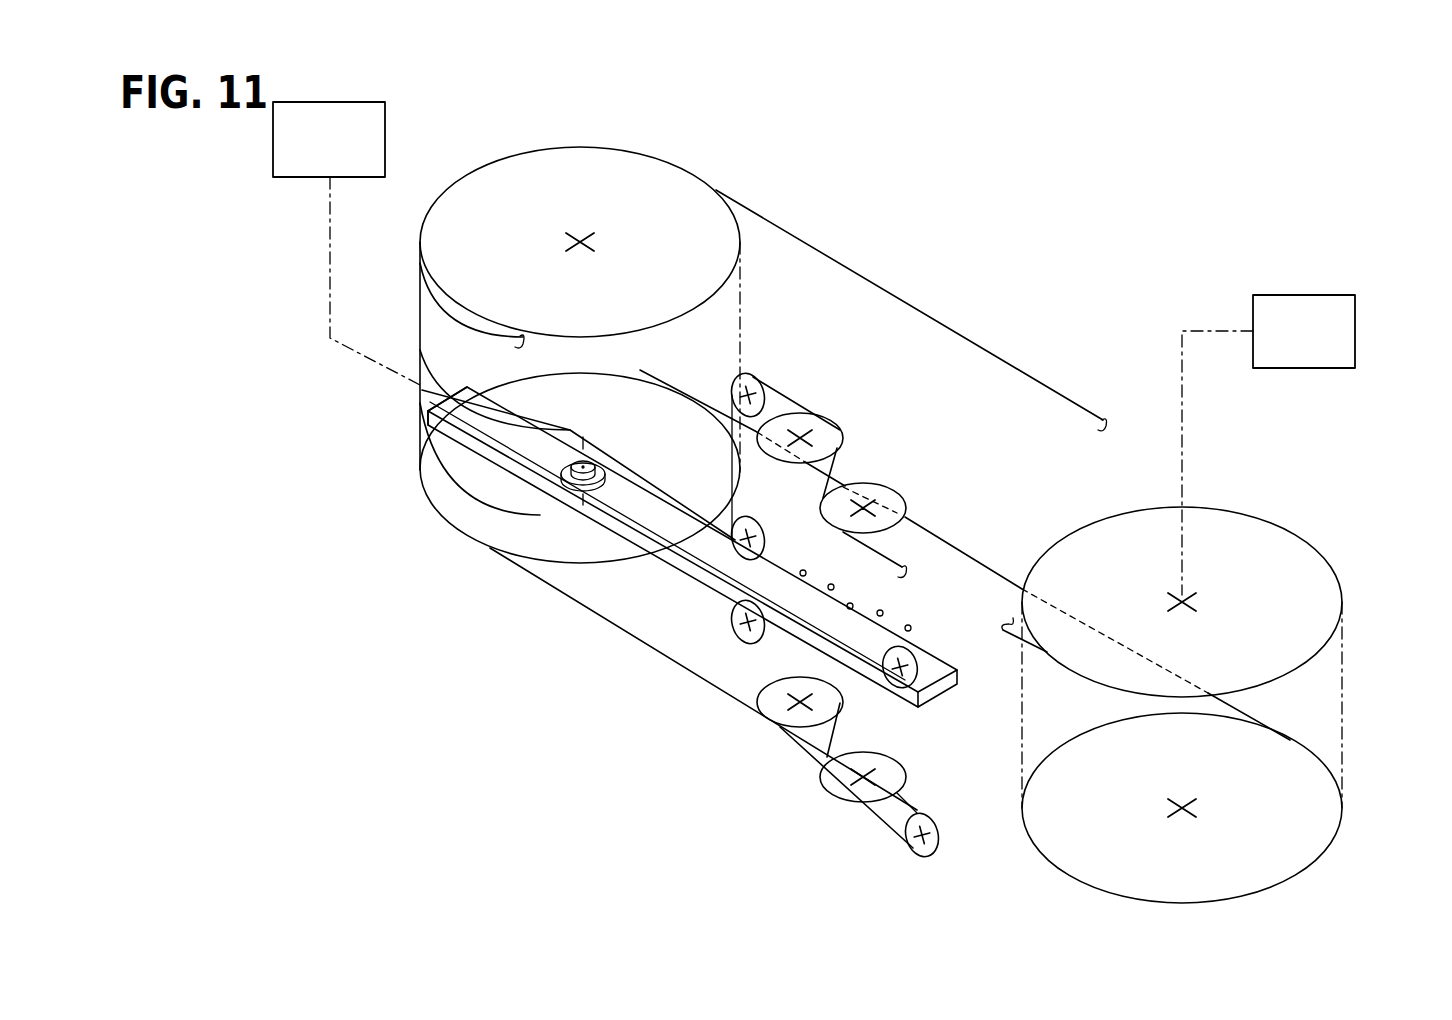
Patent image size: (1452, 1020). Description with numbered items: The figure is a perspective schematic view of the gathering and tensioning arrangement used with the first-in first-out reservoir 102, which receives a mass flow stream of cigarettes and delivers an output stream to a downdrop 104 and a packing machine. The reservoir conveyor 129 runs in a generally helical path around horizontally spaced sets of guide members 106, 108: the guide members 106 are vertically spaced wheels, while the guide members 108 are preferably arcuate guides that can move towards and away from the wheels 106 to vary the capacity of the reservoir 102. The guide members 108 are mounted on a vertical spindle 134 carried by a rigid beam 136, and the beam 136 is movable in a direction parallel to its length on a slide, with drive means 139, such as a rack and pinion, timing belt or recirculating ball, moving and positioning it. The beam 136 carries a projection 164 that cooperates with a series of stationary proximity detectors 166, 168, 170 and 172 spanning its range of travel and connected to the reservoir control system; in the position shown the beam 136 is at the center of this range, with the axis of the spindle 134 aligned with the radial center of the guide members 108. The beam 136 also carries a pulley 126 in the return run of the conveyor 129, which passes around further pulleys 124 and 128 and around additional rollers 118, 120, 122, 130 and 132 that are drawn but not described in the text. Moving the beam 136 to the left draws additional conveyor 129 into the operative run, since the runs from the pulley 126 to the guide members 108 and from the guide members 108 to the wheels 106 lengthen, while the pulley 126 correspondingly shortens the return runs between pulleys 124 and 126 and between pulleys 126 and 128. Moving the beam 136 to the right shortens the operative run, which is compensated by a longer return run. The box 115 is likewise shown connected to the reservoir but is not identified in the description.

The first-in first-out reservoir 102 is at (566, 638).
The downdrop 104 is at (920, 812).
The guide members (wheels) 106 is at (1345, 676).
The guide members (arcuate guides) 108 is at (418, 428).
The controller 115 is at (1324, 348).
The roller 118 is at (892, 494).
The roller 120 is at (838, 430).
The tape guide 122 is at (750, 376).
The pulley 124 is at (768, 530).
The pulley 126 is at (918, 660).
The pulley 128 is at (744, 643).
The conveyor 129 is at (1052, 388).
The roller 130 is at (840, 703).
The roller 132 is at (888, 767).
The vertical spindle 134 is at (603, 466).
The rigid beam 136 is at (715, 565).
The drive means 139 is at (350, 154).
The projection 164 is at (853, 605).
The proximity detector 166 is at (805, 571).
The proximity detector 168 is at (847, 575).
The proximity detector 170 is at (883, 612).
The proximity detector 172 is at (911, 628).